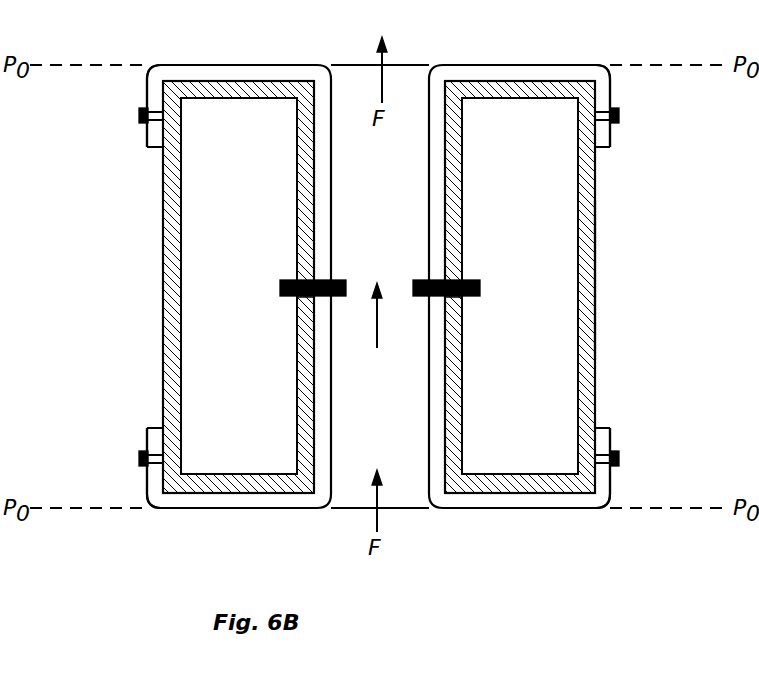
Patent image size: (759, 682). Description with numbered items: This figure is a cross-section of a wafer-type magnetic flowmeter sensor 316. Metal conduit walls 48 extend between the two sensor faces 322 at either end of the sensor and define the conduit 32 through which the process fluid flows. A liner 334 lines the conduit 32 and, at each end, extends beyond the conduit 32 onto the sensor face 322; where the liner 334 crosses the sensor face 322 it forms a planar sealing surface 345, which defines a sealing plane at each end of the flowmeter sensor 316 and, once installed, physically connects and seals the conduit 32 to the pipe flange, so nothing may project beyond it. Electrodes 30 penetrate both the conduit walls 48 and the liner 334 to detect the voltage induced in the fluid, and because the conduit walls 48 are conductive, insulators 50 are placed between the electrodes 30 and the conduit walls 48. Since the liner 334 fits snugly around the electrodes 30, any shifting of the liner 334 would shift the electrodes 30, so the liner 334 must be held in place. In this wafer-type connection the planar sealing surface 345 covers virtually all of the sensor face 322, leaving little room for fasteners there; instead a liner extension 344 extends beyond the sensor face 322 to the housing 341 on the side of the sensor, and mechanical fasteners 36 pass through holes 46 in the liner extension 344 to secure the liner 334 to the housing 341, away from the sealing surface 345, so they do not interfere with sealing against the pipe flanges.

The electrode 30 is at (281, 283).
The conduit 32 is at (391, 267).
The mechanical fastener 36 is at (139, 114).
The hole 46 is at (150, 126).
The conduit wall 48 is at (296, 192).
The insulator 50 is at (293, 299).
The magnetic flowmeter sensor 316 is at (609, 279).
The sensor face 322 is at (236, 82).
The liner 334 is at (342, 86).
The housing 341 is at (160, 86).
The liner extension 344 is at (146, 96).
The planar sealing surface 345 is at (453, 64).